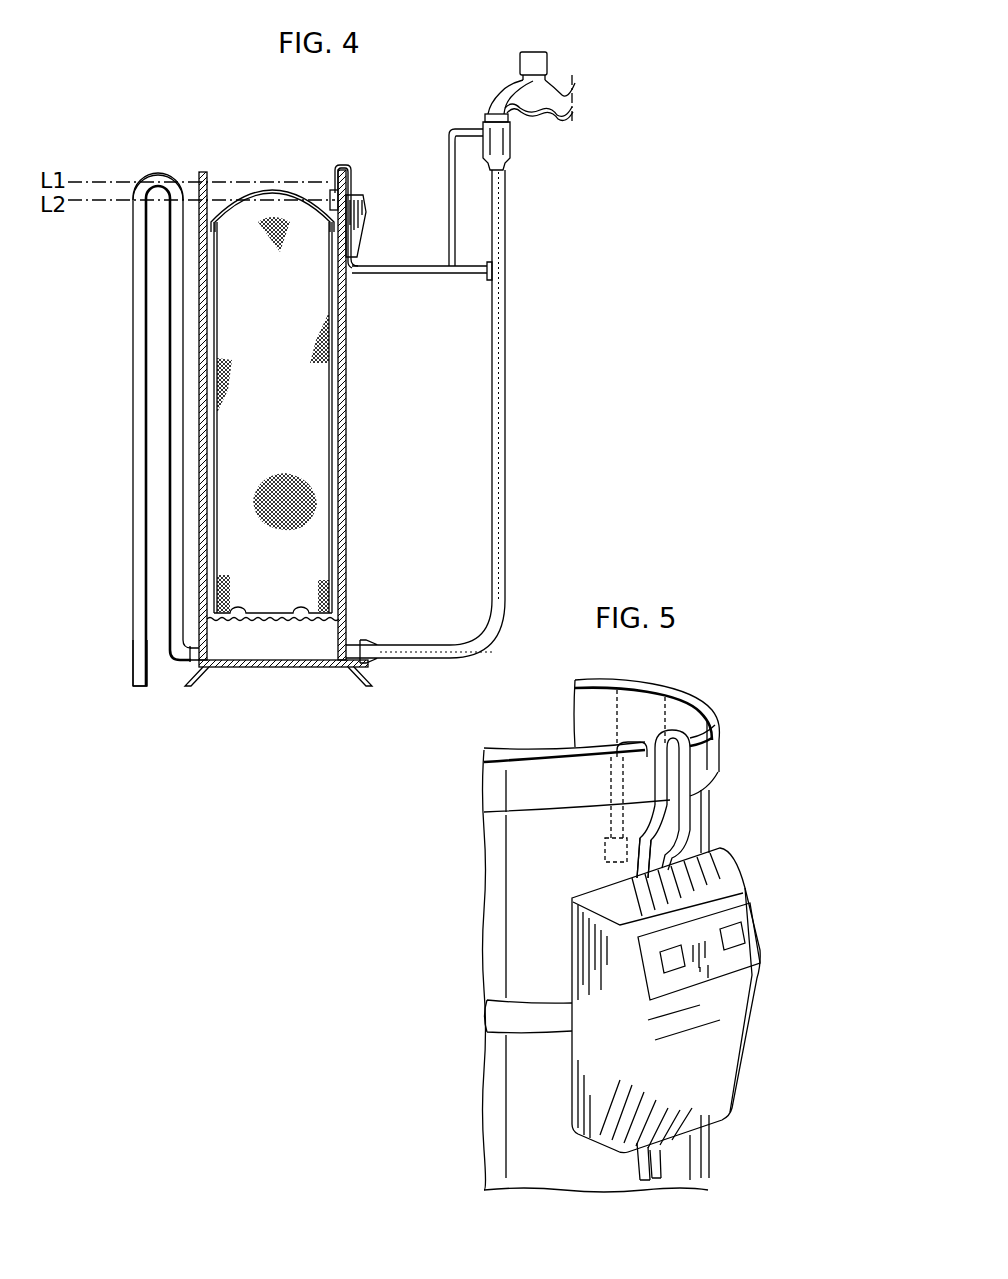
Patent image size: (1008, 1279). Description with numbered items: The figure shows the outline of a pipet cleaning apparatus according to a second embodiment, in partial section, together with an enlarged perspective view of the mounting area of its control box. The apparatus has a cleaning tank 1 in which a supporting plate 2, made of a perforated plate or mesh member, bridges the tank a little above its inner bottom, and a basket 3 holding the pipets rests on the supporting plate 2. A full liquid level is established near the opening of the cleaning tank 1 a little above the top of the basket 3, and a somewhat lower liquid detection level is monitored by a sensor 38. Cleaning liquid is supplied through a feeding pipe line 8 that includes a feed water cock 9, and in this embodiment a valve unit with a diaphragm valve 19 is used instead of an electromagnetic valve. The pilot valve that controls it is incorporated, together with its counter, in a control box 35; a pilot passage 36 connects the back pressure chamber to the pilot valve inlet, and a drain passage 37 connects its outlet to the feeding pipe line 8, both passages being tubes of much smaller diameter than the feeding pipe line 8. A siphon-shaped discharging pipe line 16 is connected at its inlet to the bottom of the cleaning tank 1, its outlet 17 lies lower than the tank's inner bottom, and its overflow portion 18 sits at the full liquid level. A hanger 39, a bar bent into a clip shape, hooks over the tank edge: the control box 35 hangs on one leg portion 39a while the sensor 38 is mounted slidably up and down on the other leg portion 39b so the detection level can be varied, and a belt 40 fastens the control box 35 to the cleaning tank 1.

In FIG. 4, the cleaning tank 1 is at (345, 384).
In FIG. 5, the cleaning tank 1 is at (678, 688).
In FIG. 4, the supporting plate 2 is at (272, 613).
In FIG. 4, the basket 3 is at (332, 462).
In FIG. 4, the feeding pipe line 8 is at (508, 483).
In FIG. 4, the feed water cock 9 is at (531, 52).
In FIG. 4, the discharging pipe line 16 is at (133, 412).
In FIG. 4, the outlet 17 is at (135, 688).
In FIG. 4, the overflow portion 18 is at (158, 173).
In FIG. 4, the diaphragm valve 19 is at (498, 150).
In FIG. 4, the control box 35 is at (358, 232).
In FIG. 5, the control box 35 is at (720, 1070).
In FIG. 4, the pilot passage 36 is at (447, 182).
In FIG. 5, the pilot passage 36 is at (658, 1153).
In FIG. 4, the drain passage 37 is at (437, 277).
In FIG. 5, the drain passage 37 is at (658, 1165).
In FIG. 4, the sensor 38 is at (333, 190).
In FIG. 5, the sensor 38 is at (607, 838).
In FIG. 4, the hanger 39 is at (350, 165).
In FIG. 5, the hanger 39 is at (695, 798).
In FIG. 5, the leg portion 39a is at (640, 862).
In FIG. 5, the leg portion 39b is at (600, 793).
In FIG. 5, the belt 40 is at (505, 1000).